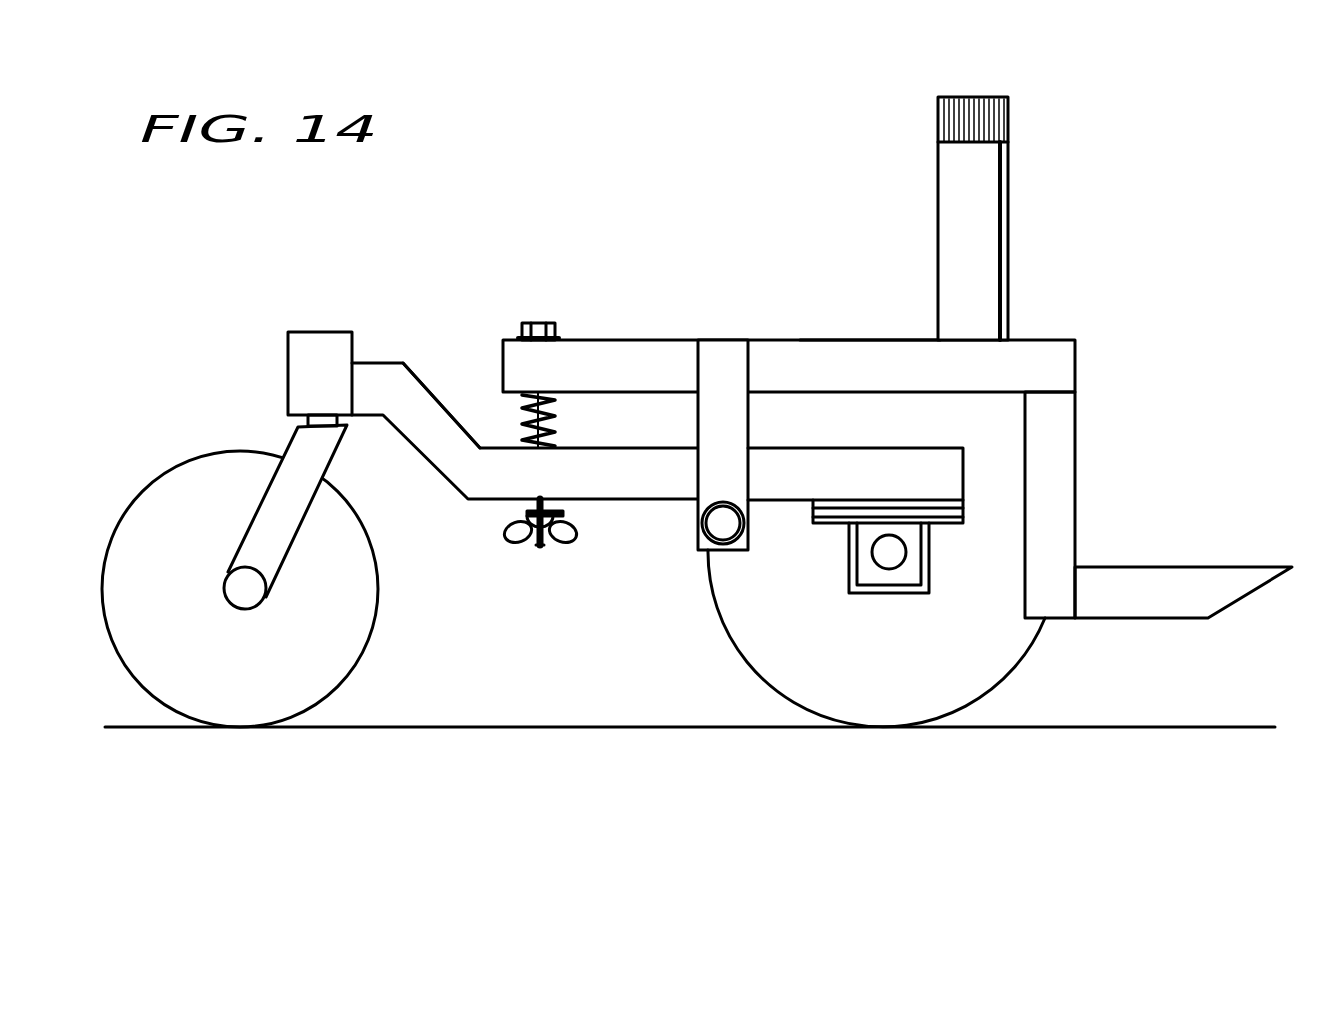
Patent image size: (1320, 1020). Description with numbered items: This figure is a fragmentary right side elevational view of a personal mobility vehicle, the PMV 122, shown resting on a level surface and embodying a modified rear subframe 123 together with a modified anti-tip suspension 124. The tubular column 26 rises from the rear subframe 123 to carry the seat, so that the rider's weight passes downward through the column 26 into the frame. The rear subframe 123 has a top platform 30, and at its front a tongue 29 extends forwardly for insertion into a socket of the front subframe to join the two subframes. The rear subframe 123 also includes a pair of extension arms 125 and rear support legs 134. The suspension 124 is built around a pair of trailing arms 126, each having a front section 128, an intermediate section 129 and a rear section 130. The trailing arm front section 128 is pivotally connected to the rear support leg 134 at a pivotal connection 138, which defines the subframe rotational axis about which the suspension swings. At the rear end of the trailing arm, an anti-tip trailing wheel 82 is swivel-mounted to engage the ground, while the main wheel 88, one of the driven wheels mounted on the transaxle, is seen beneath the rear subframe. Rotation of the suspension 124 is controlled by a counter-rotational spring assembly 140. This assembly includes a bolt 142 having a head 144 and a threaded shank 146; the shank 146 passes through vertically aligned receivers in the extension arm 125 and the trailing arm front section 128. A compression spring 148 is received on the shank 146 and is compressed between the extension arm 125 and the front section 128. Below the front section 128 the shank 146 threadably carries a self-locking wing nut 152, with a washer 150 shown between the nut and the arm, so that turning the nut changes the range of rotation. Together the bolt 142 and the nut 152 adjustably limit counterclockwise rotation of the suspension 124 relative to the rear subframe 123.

The PMV 122 is at (822, 412).
The tubular column 26 is at (1010, 232).
The top platform 30 is at (872, 340).
The rear subframe 123 is at (1073, 340).
The anti-tip suspension 124 is at (293, 332).
The trailing arm rear section 130 is at (377, 360).
The trailing arm intermediate section 129 is at (410, 446).
The extension arm 125 is at (641, 382).
The compression spring 148 is at (553, 424).
The rear support leg 134 is at (748, 420).
The pivotal connection 138 is at (730, 552).
The trailing arm 126 is at (974, 434).
The trailing arm front section 128 is at (876, 494).
The counter-rotational spring assembly 140 is at (588, 521).
The bolt 142 is at (547, 322).
The bolt head 144 is at (527, 322).
The threaded shank 146 is at (540, 548).
The washer 150 is at (527, 513).
The self-locking wing nut 152 is at (517, 548).
The tongue 29 is at (1220, 565).
The anti-tip trailing wheel 82 is at (266, 667).
The main wheel 88 is at (920, 657).